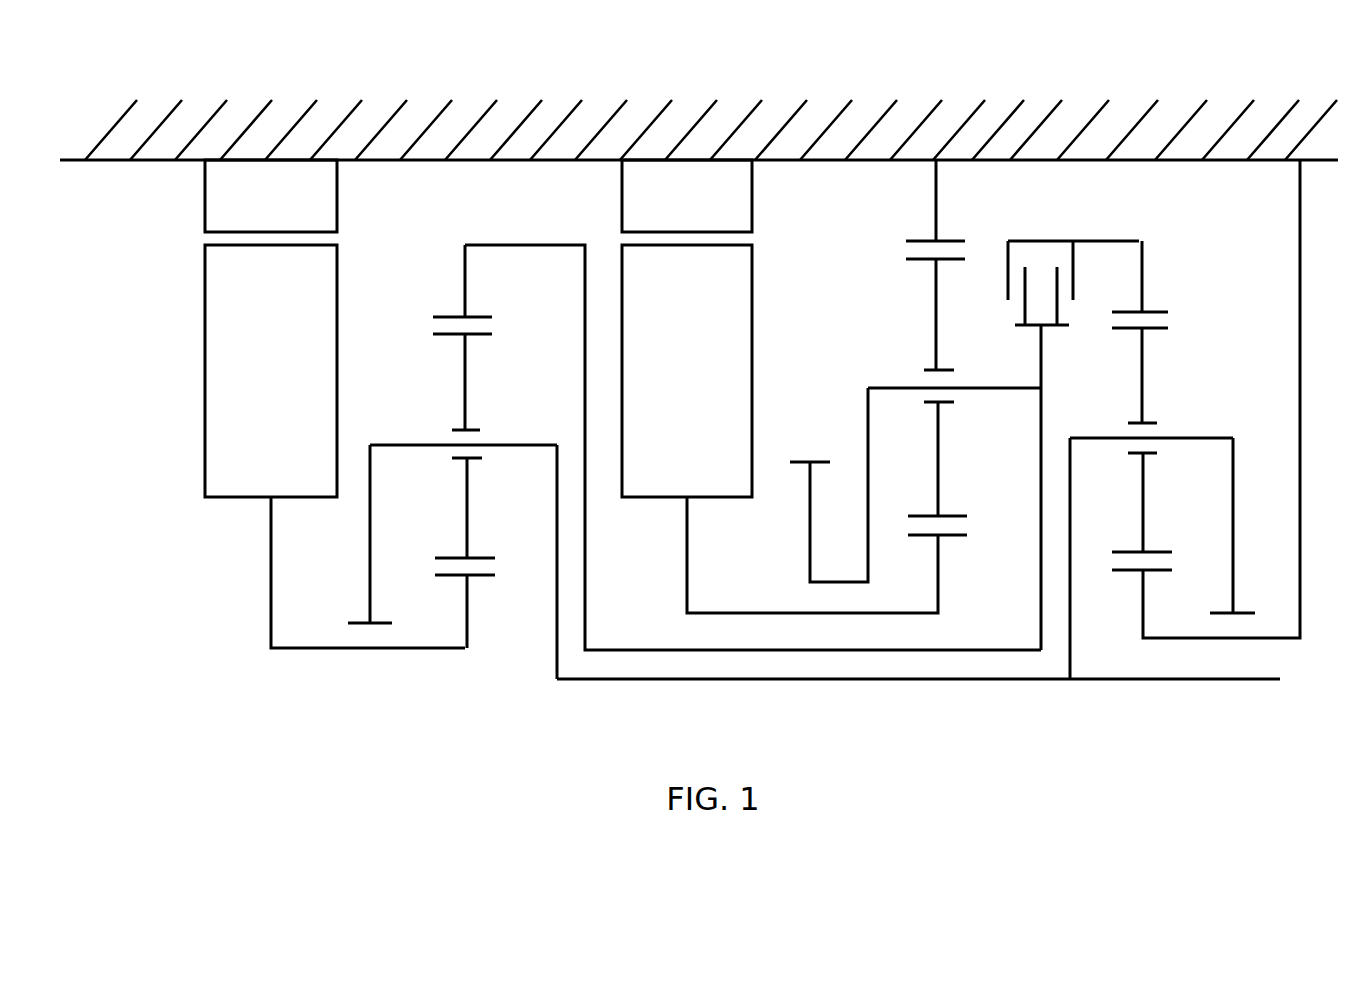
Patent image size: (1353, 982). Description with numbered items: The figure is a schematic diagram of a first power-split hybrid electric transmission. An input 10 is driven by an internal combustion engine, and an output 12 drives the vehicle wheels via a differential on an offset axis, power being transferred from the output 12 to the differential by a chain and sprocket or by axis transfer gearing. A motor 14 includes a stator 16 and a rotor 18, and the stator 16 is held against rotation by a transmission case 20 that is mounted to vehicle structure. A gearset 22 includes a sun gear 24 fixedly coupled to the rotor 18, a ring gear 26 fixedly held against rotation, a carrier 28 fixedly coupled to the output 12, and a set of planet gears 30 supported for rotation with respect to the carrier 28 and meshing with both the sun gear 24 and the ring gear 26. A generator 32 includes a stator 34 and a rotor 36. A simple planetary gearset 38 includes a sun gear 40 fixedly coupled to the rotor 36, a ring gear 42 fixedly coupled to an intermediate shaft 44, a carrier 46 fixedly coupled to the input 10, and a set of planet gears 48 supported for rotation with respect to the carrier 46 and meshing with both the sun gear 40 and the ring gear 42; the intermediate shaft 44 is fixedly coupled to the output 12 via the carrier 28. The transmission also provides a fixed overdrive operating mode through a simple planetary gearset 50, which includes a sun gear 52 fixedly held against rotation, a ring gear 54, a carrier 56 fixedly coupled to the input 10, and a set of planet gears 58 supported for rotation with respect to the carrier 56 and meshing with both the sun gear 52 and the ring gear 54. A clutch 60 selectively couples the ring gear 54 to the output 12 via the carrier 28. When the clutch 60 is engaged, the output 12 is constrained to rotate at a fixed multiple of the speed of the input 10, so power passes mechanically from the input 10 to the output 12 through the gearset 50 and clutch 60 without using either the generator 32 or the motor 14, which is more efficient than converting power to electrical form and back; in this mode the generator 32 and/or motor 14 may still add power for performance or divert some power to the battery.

The input 10 is at (850, 682).
The output 12 is at (805, 458).
The motor 14 is at (699, 112).
The stator 16 is at (620, 203).
The rotor 18 is at (753, 333).
The transmission case 20 is at (667, 269).
The gearset 22 is at (753, 447).
The sun gear 24 is at (938, 570).
The ring gear 26 is at (936, 193).
The carrier 28 is at (1040, 443).
The planet gears 30 is at (938, 333).
The generator 32 is at (264, 281).
The stator 34 is at (204, 197).
The rotor 36 is at (338, 373).
The simple planetary gearset 38 is at (414, 491).
The sun gear 40 is at (465, 618).
The ring gear 42 is at (465, 273).
The intermediate shaft 44 is at (623, 648).
The carrier 46 is at (368, 543).
The planet gears 48 is at (465, 392).
The simple planetary gearset 50 is at (1185, 450).
The sun gear 52 is at (1143, 616).
The ring gear 54 is at (1138, 273).
The carrier 56 is at (1193, 437).
The planet gears 58 is at (1145, 363).
The clutch 60 is at (1033, 241).